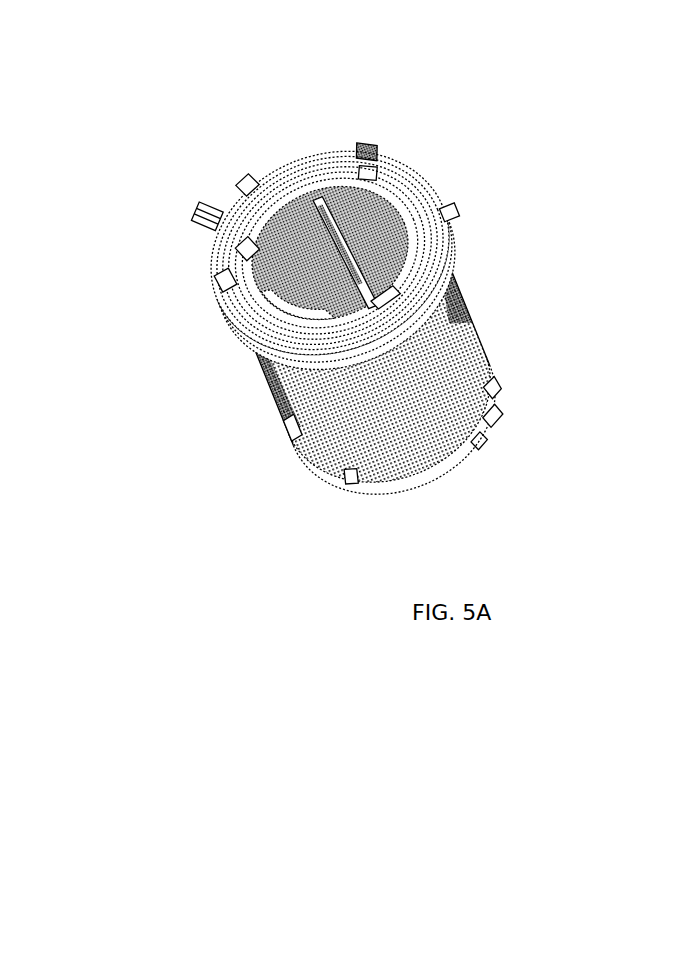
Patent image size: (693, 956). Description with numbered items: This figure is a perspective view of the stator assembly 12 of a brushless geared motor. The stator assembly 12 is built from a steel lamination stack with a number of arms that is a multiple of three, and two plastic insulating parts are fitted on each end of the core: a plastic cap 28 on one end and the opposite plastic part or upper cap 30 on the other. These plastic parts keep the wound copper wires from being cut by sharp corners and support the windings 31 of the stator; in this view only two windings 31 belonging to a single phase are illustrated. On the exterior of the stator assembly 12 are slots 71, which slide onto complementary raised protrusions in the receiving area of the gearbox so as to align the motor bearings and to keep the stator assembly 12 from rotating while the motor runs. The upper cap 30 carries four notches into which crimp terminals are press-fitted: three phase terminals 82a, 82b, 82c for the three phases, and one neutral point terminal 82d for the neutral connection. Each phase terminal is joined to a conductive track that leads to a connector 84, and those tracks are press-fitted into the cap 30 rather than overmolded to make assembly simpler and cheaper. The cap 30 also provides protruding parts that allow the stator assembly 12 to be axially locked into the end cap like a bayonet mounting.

The stator assembly 12 is at (475, 305).
The plastic cap 28 is at (480, 427).
The upper cap 30 is at (238, 313).
The windings 31 is at (257, 197).
The slots 71 is at (490, 393).
The phase terminal 82a is at (373, 153).
The phase terminal 82b is at (248, 192).
The phase terminal 82c is at (225, 280).
The neutral point terminal 82d is at (292, 428).
The connector 84 is at (205, 215).